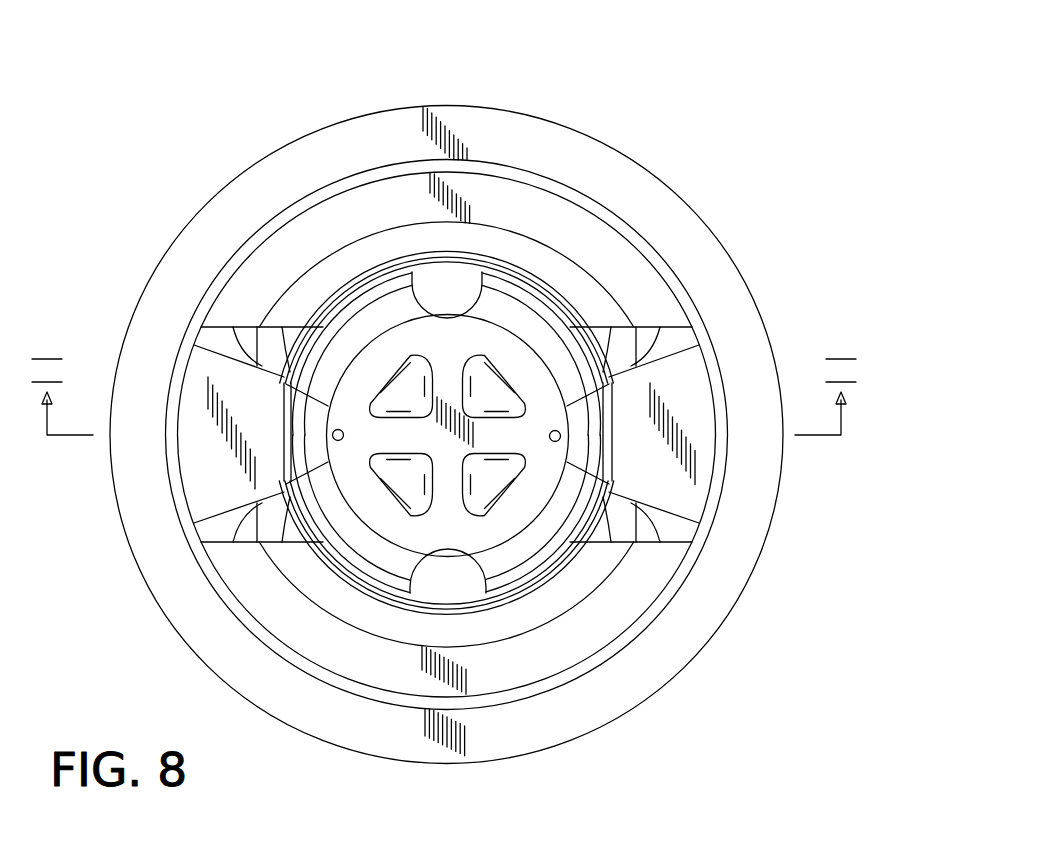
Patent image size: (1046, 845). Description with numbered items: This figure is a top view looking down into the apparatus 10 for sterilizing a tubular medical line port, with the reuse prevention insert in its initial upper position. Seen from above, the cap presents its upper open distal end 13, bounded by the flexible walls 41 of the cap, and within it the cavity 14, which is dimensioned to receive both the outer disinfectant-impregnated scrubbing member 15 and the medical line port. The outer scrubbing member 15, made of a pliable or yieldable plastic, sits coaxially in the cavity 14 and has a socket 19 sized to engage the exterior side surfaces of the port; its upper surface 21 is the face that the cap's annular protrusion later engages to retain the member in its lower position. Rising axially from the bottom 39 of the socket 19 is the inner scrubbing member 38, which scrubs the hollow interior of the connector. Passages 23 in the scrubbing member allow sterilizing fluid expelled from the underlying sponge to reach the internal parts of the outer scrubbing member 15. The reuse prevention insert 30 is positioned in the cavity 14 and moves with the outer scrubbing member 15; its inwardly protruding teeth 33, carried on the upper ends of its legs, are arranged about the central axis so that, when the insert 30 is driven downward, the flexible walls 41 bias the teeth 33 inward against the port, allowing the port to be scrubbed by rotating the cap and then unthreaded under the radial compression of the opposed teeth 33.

The apparatus 10 is at (764, 130).
The upper open distal end 13 is at (625, 175).
The cavity 14 is at (528, 678).
The outer disinfectant-impregnated scrubbing member 15 is at (538, 213).
The socket 19 is at (547, 527).
The upper surface 21 is at (437, 197).
The passages 23 is at (333, 543).
The reuse prevention insert 30 is at (205, 397).
The teeth 33 is at (284, 413).
The inner scrubbing member 38 is at (487, 497).
The bottom 39 is at (373, 353).
The flexible walls 41 is at (690, 662).